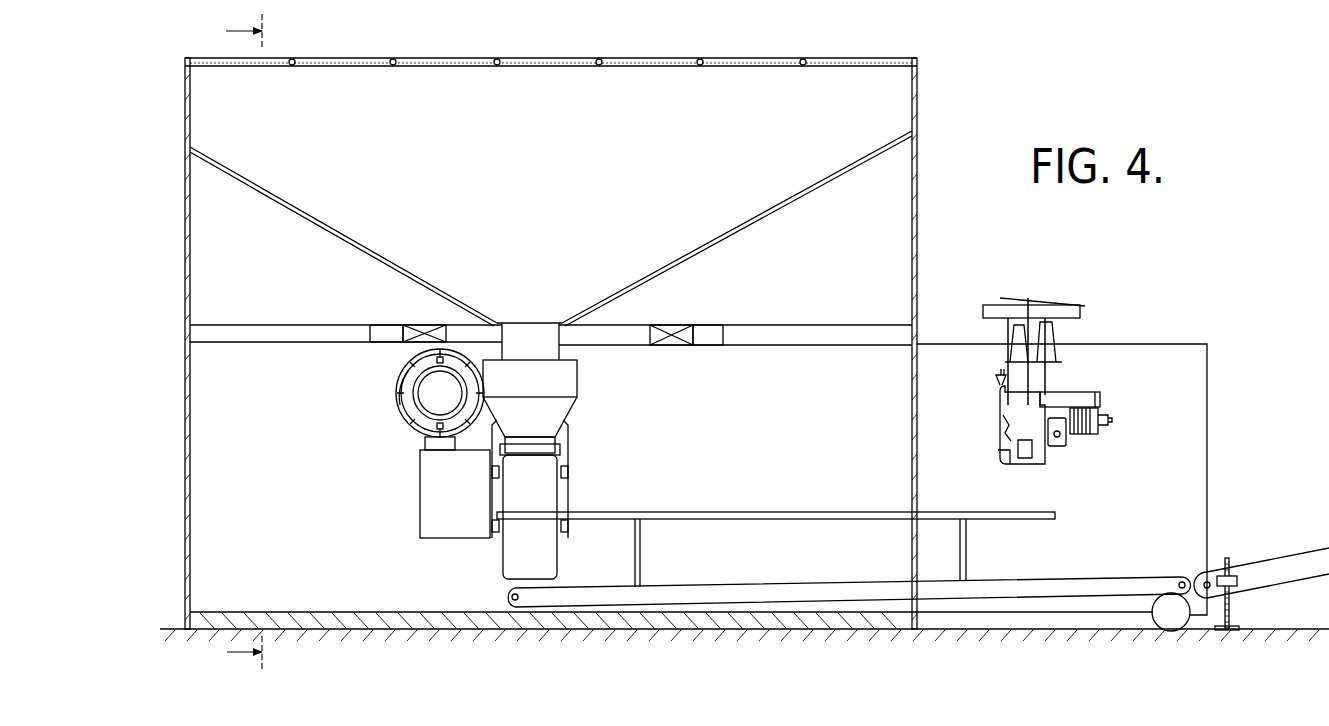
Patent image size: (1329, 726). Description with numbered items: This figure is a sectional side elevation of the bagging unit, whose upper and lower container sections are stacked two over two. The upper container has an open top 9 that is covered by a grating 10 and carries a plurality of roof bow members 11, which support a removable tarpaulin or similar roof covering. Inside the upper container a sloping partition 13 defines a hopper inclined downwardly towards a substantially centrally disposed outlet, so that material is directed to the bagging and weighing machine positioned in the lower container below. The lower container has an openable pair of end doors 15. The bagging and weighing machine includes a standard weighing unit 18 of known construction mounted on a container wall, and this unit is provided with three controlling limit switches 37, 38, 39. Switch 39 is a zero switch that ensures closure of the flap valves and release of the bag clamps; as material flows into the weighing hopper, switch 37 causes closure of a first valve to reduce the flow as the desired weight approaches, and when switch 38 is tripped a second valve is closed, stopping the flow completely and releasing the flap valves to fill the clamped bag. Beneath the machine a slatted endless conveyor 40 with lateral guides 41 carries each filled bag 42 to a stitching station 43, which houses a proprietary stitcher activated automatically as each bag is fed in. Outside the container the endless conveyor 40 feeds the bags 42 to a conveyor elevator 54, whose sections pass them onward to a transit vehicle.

The open top 9 is at (563, 56).
The grating 10 is at (640, 70).
The roof bow members 11 is at (394, 61).
The sloping partition 13 is at (333, 212).
The end doors 15 is at (1204, 353).
The weighing unit 18 is at (406, 407).
The limit switch 37 is at (403, 411).
The limit switch 38 is at (409, 376).
The limit switch 39 is at (438, 356).
The slatted endless conveyor 40 is at (761, 590).
The lateral guides 41 is at (800, 510).
The bag 42 is at (548, 511).
The stitching station 43 is at (1105, 396).
The conveyor elevator 54 is at (1271, 566).